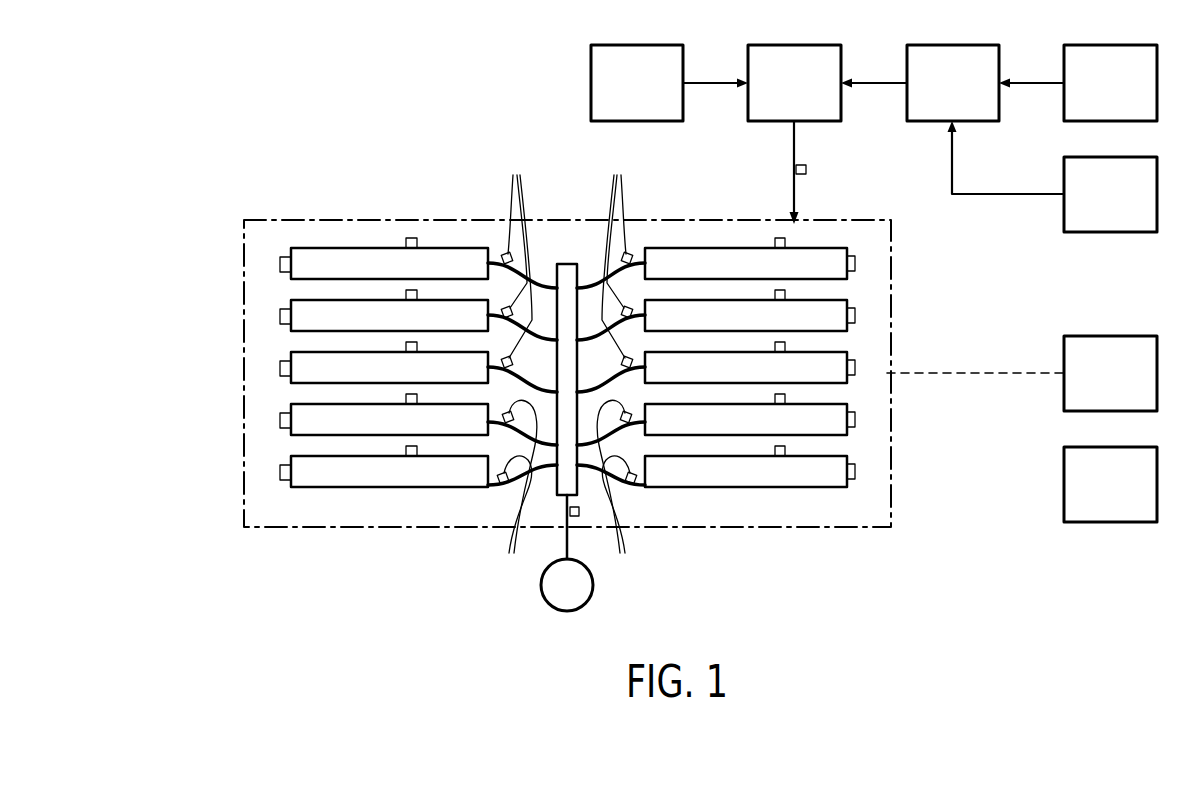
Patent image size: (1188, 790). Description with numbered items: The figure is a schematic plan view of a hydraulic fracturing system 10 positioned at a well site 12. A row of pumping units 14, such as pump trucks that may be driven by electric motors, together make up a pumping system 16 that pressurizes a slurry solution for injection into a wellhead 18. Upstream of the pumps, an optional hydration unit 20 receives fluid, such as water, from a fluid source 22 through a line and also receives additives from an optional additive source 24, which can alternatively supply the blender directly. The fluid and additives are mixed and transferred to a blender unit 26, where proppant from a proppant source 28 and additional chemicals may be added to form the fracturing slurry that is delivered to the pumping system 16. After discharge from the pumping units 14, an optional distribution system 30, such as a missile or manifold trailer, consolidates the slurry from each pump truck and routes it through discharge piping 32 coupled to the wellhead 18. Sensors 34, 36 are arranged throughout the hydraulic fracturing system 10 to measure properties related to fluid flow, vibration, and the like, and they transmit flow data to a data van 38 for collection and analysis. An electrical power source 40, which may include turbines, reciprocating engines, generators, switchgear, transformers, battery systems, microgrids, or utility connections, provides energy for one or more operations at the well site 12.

The hydraulic fracturing system 10 is at (212, 103).
The well site 12 is at (277, 632).
The pumping unit 14 is at (376, 277).
The pumping system 16 is at (253, 212).
The wellhead 18 is at (554, 599).
The hydration unit 20 is at (940, 97).
The fluid source 22 is at (1097, 97).
The additive source 24 is at (1097, 208).
The blender unit 26 is at (781, 97).
The proppant source 28 is at (624, 97).
The distribution system 30 is at (566, 268).
The discharge piping 32 is at (565, 540).
The sensor 34 is at (955, 480).
The sensor 36 is at (280, 262).
The data van 38 is at (1097, 387).
The electrical power source 40 is at (1097, 498).